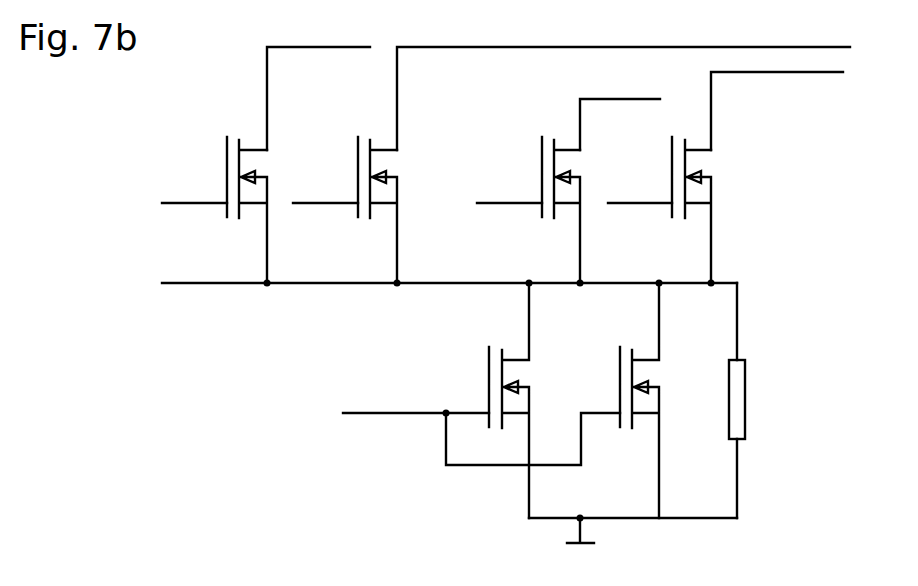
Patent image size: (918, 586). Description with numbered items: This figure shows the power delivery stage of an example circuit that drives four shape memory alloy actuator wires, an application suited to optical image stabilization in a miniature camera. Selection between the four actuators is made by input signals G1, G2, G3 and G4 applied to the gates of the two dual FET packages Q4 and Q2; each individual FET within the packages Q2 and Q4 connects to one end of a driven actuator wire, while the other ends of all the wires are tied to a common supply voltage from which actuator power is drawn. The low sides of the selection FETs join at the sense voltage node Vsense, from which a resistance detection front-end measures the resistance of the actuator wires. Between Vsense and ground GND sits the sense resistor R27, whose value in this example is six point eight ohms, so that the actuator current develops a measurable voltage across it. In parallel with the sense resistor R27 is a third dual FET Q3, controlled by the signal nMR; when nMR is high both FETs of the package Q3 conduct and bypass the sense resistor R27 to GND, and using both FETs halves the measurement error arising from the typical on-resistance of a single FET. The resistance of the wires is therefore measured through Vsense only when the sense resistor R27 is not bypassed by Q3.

The dual FET Q2 is at (279, 210).
The dual FET Q4 is at (594, 210).
The dual FET Q3 is at (552, 400).
The sense resistor R27 is at (754, 400).
The input signal G1 is at (509, 194).
The input signal G2 is at (194, 194).
The input signal G3 is at (640, 194).
The input signal G4 is at (325, 194).
The sense voltage Vsense is at (438, 267).
The bypass signal nMR is at (394, 404).
The ground GND is at (633, 541).